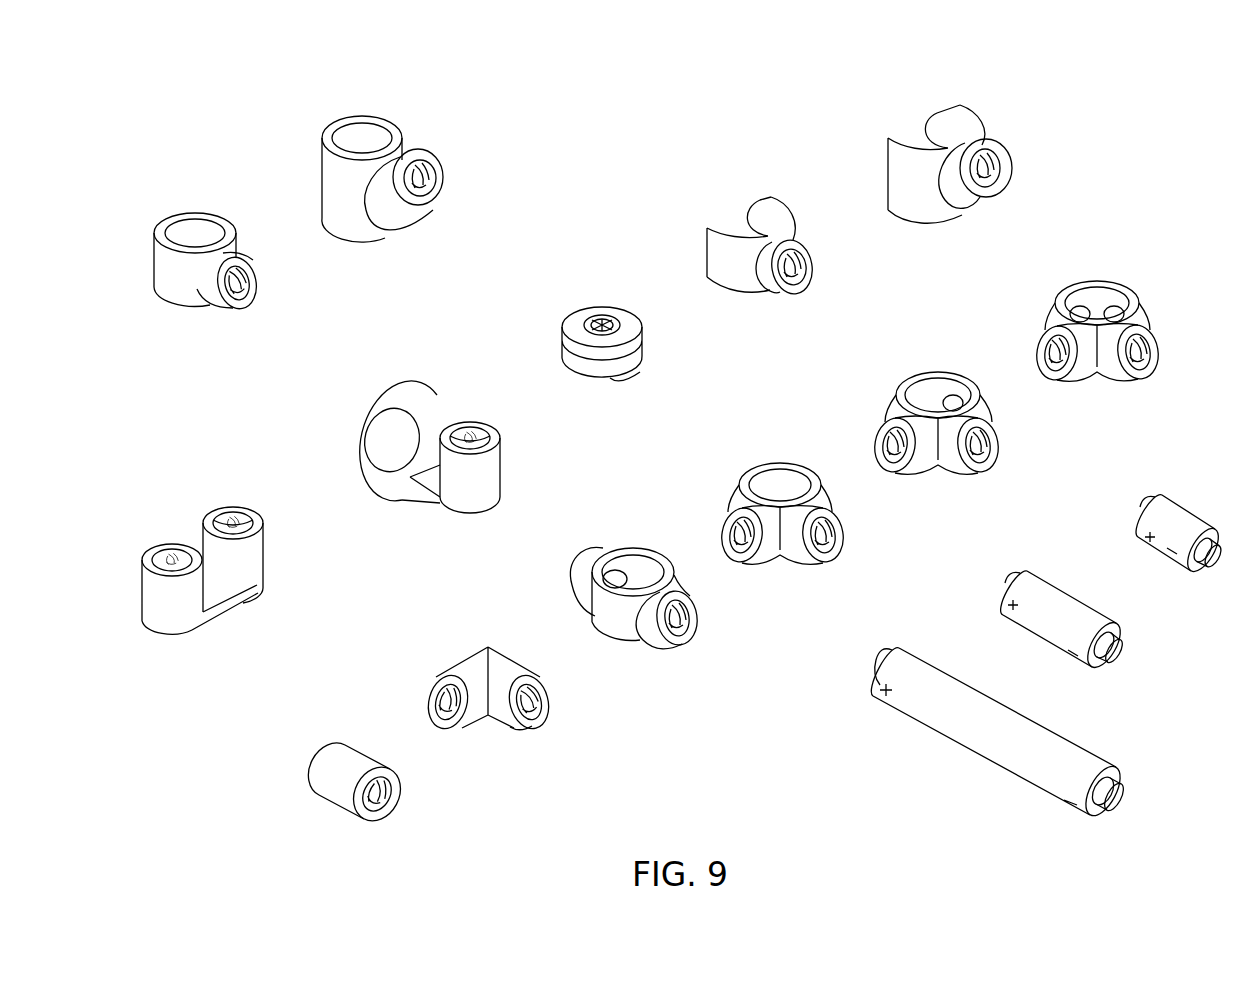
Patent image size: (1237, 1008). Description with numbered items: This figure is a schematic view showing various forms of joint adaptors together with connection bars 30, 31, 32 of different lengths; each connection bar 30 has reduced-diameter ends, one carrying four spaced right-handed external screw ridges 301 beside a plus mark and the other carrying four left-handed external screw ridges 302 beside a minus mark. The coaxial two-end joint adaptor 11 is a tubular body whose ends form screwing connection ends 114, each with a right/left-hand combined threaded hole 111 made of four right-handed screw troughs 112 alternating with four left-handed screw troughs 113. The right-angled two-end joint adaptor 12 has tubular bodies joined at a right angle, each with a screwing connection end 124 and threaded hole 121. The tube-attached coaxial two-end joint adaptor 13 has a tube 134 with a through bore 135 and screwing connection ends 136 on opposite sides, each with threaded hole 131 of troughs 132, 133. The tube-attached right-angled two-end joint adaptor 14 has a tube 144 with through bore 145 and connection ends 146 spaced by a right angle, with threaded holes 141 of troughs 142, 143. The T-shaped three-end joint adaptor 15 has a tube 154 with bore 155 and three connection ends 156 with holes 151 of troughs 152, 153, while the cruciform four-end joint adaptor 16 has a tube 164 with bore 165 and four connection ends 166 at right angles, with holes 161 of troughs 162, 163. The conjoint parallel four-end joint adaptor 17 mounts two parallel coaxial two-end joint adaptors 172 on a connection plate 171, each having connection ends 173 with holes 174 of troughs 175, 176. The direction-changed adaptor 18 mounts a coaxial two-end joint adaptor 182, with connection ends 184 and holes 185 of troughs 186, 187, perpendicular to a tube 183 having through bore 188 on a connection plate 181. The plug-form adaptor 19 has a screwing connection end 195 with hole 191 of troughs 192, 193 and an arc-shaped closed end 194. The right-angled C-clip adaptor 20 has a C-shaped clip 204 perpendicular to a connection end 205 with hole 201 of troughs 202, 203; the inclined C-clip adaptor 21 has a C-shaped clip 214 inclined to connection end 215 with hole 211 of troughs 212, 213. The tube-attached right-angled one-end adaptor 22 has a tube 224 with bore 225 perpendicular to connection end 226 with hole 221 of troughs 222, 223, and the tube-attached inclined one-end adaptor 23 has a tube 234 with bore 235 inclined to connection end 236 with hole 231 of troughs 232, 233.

The coaxial two-end joint adaptor 11 is at (386, 757).
The right/left-hand combined threaded hole 111 is at (388, 805).
The right-handed screw troughs 112 is at (386, 779).
The left-handed screw troughs 113 is at (388, 792).
The screwing connection end 114 is at (358, 810).
The right-angled two-end joint adaptor 12 is at (512, 677).
The right/left-hand combined threaded hole 121 is at (535, 720).
The screwing connection end 124 is at (520, 730).
The tube-attached coaxial two-end joint adaptor 13 is at (664, 589).
The right/left-hand combined threaded hole 131 is at (690, 633).
The right-handed screw troughs 132 is at (692, 608).
The left-handed screw troughs 133 is at (694, 617).
The tube 134 is at (600, 567).
The through bore 135 is at (630, 571).
The screwing connection end 136 is at (668, 648).
The tube-attached right-angled two-end joint adaptor 14 is at (814, 503).
The right/left-hand combined threaded hole 141 is at (835, 548).
The right-handed screw troughs 142 is at (840, 522).
The left-handed screw troughs 143 is at (843, 530).
The tube 144 is at (750, 482).
The through bore 145 is at (778, 484).
The screwing connection end 146 is at (815, 560).
The tube-attached T-shaped three-end joint adaptor 15 is at (970, 409).
The right/left-hand combined threaded hole 151 is at (990, 457).
The right-handed screw troughs 152 is at (995, 432).
The left-handed screw troughs 153 is at (998, 440).
The tube 154 is at (905, 392).
The through bore 155 is at (936, 394).
The screwing connection end 156 is at (972, 472).
The tube-attached cruciform four-end joint adaptor 16 is at (1127, 321).
The right/left-hand combined threaded hole 161 is at (1148, 365).
The right-handed screw troughs 162 is at (1155, 337).
The left-handed screw troughs 163 is at (1158, 346).
The tube 164 is at (1068, 303).
The through bore 165 is at (1093, 302).
The screwing connection end 166 is at (1132, 376).
The conjoint parallel four-end joint adaptor 17 is at (215, 536).
The connection plate 171 is at (228, 607).
The coaxial two-end joint adaptor 172 is at (147, 590).
The screwing connection end 173 is at (207, 518).
The right/left-hand combined threaded hole 174 is at (229, 521).
The right-handed screw troughs 175 is at (255, 520).
The left-handed screw troughs 176 is at (247, 516).
The direction-changed tube-conjoined two-end joint adaptor 18 is at (432, 448).
The connection plate 181 is at (420, 495).
The coaxial two-end joint adaptor 182 is at (498, 470).
The tube 183 is at (363, 443).
The screwing connection end 184 is at (447, 436).
The right/left-hand combined threaded hole 185 is at (463, 437).
The right-handed screw troughs 186 is at (480, 428).
The left-handed screw troughs 187 is at (488, 432).
The through bore 188 is at (388, 440).
The plug-form one-end joint adaptor 19 is at (631, 322).
The right/left-hand combined threaded hole 191 is at (590, 318).
The right-handed screw troughs 192 is at (606, 318).
The left-handed screw troughs 193 is at (618, 318).
The arc-shaped closed end 194 is at (618, 378).
The screwing connection end 195 is at (632, 322).
The right-angled C-clip one-end joint adaptor 20 is at (789, 250).
The right/left-hand combined threaded hole 201 is at (800, 282).
The right-handed screw troughs 202 is at (807, 258).
The left-handed screw troughs 203 is at (810, 265).
The C-shaped clip 204 is at (718, 226).
The screwing connection end 205 is at (782, 294).
The inclined C-clip one-end joint adaptor 21 is at (977, 162).
The right/left-hand combined threaded hole 211 is at (1000, 180).
The right-handed screw troughs 212 is at (1003, 155).
The left-handed screw troughs 213 is at (1005, 165).
The C-shaped clip 214 is at (896, 138).
The screwing connection end 215 is at (988, 190).
The tube-attached right-angled one-end joint adaptor 22 is at (219, 251).
The right/left-hand combined threaded hole 221 is at (243, 293).
The right-handed screw troughs 222 is at (247, 272).
The left-handed screw troughs 223 is at (250, 280).
The tube 224 is at (183, 228).
The through bore 225 is at (193, 230).
The screwing connection end 226 is at (228, 307).
The tube-attached inclined one-end joint adaptor 23 is at (399, 177).
The right/left-hand combined threaded hole 231 is at (430, 195).
The right-handed screw troughs 232 is at (435, 165).
The left-handed screw troughs 233 is at (438, 178).
The tube 234 is at (325, 133).
The through bore 235 is at (365, 136).
The screwing connection end 236 is at (422, 205).
The connection bar 30 is at (957, 753).
The right-handed external screw ridges 301 is at (868, 668).
The left-handed external screw ridges 302 is at (1092, 800).
The connection bar 31 is at (1060, 658).
The connection bar 32 is at (1162, 558).